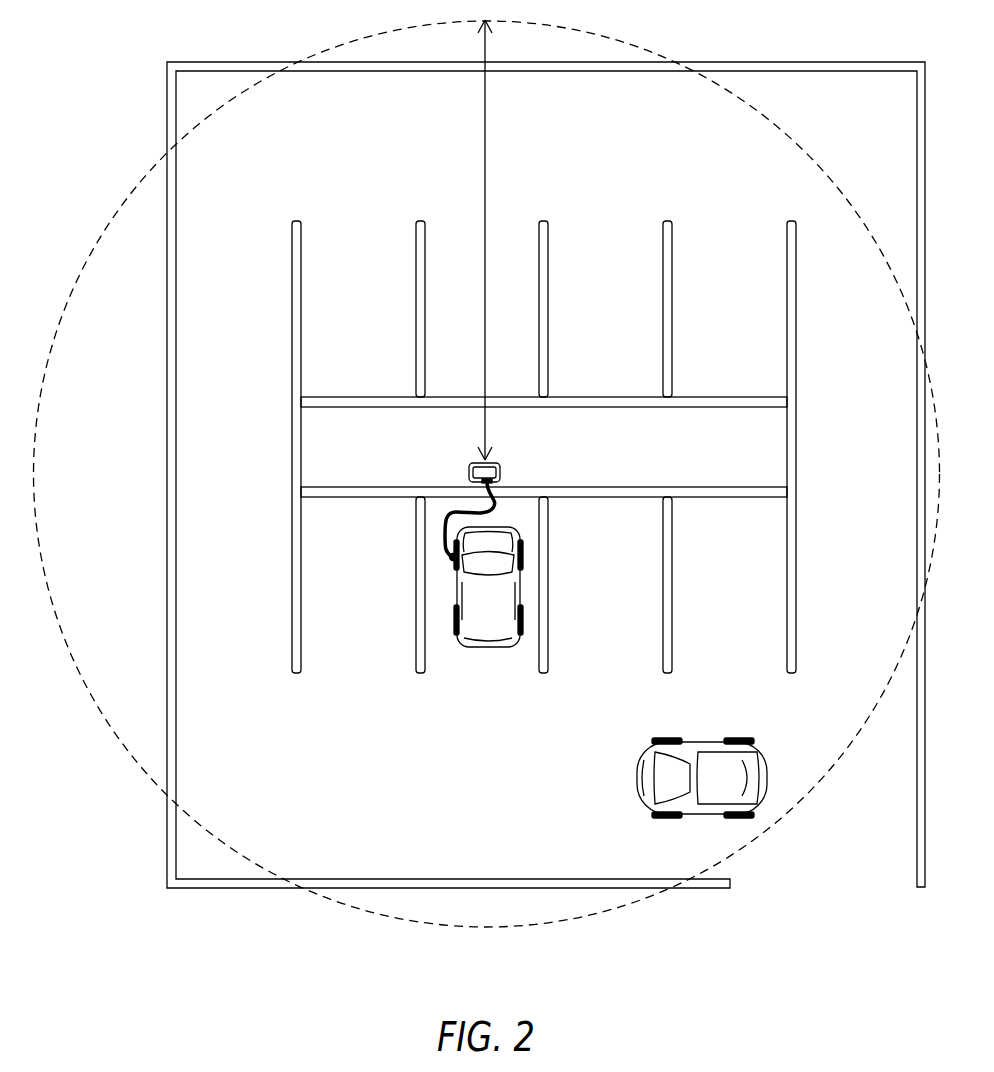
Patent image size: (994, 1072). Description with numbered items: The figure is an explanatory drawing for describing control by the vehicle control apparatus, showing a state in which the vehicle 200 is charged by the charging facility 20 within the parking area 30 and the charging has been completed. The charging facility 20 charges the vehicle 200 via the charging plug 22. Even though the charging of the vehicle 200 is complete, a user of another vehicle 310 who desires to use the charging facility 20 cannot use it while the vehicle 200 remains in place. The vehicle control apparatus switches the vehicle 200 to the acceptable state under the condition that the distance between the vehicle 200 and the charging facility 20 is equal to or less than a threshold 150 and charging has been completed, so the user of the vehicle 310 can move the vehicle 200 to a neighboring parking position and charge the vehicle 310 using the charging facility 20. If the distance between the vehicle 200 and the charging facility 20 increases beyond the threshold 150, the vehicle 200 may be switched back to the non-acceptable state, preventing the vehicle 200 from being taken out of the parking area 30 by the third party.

The parking area 30 is at (193, 58).
The threshold 150 is at (487, 167).
The charging facility 20 is at (499, 462).
The charging plug 22 is at (452, 562).
The vehicle 200 is at (487, 650).
The vehicle 310 is at (697, 740).